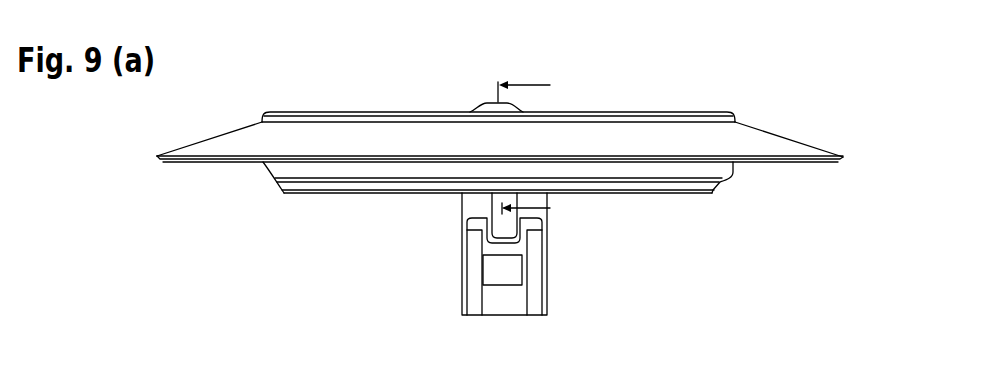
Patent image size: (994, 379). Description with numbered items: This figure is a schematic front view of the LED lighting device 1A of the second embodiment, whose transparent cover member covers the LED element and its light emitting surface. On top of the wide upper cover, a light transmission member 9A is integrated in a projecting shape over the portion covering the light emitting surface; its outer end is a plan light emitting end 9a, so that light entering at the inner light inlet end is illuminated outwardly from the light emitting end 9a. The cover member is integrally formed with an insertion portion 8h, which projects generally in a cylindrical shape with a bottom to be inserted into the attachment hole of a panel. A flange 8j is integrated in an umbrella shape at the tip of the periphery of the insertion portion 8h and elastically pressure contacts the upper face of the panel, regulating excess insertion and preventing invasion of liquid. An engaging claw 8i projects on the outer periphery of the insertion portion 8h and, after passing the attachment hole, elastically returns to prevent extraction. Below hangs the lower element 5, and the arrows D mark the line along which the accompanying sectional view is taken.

The LED lighting device 1A is at (274, 100).
The flange 8j is at (185, 146).
The engaging claw 8i is at (263, 168).
The insertion portion 8h is at (282, 192).
The light transmission member 9A is at (490, 102).
The light emitting end 9a is at (496, 107).
The stem / holder 5 is at (462, 273).
The section line D- D is at (531, 148).